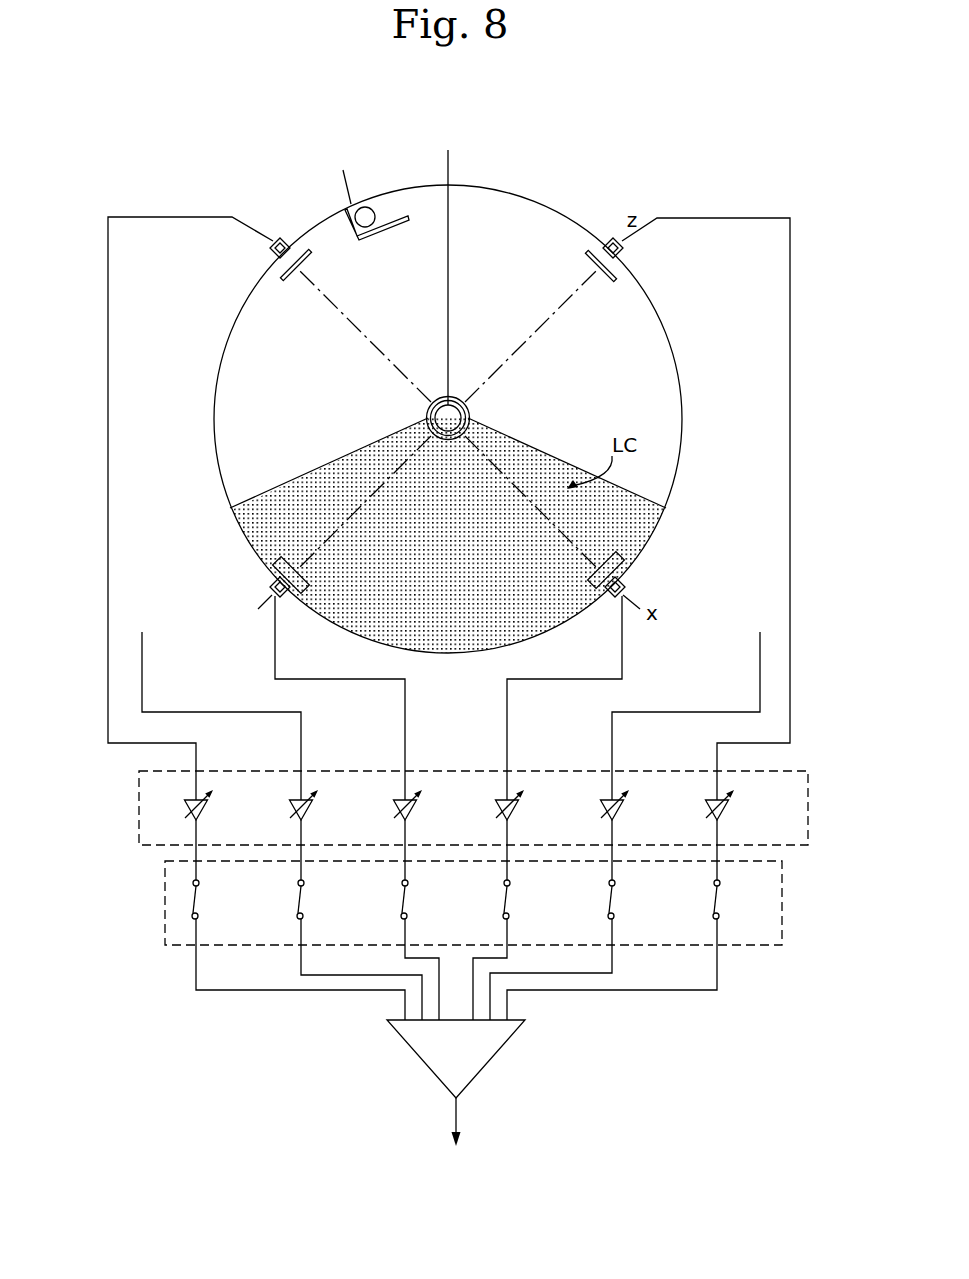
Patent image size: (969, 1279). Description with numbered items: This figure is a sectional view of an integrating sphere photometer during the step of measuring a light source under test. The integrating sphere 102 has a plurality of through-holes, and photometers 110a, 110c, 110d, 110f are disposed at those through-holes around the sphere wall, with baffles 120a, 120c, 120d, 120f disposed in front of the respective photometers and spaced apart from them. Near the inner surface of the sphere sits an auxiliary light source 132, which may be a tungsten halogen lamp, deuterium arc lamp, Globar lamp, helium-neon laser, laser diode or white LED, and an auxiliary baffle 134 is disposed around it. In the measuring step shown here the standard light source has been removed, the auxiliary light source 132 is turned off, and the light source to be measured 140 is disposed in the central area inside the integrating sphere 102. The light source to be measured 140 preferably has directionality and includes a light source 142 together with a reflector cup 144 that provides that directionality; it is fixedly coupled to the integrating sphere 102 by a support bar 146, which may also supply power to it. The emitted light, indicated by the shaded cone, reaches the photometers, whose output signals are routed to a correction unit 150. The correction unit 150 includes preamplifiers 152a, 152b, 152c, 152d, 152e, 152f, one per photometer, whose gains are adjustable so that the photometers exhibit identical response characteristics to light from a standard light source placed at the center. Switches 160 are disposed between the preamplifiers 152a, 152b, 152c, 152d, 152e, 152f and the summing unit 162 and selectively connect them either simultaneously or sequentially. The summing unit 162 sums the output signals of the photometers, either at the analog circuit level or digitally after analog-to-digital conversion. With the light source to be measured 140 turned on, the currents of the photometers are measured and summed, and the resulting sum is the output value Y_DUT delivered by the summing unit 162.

The integrating sphere 102 is at (520, 187).
The photometer 110a is at (628, 589).
The photometer 110c is at (629, 256).
The photometer 110d is at (270, 256).
The photometer 110f is at (270, 589).
The baffle 120a is at (607, 557).
The baffle 120c is at (608, 279).
The baffle 120d is at (286, 278).
The baffle 120f is at (287, 559).
The auxiliary light source 132 is at (368, 207).
The auxiliary baffle 134 is at (403, 218).
The light source to be measured 140 is at (532, 404).
The light source 142 is at (465, 411).
The reflector cup 144 is at (462, 399).
The support bar 146 is at (448, 160).
The correction unit 150 is at (139, 808).
The preamplifier 152a is at (517, 815).
The preamplifier 152b is at (622, 815).
The preamplifier 152c is at (727, 815).
The preamplifier 152d is at (206, 815).
The preamplifier 152e is at (311, 815).
The preamplifier 152f is at (415, 815).
The switches 160 is at (165, 898).
The summing unit 162 is at (497, 1055).